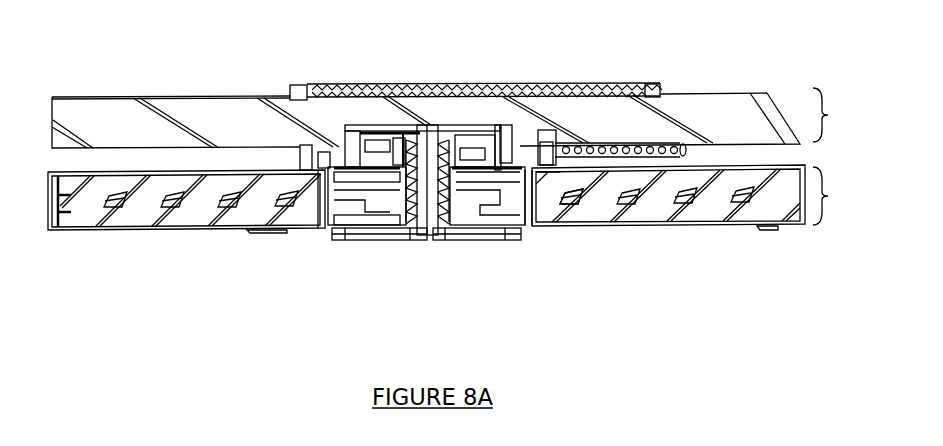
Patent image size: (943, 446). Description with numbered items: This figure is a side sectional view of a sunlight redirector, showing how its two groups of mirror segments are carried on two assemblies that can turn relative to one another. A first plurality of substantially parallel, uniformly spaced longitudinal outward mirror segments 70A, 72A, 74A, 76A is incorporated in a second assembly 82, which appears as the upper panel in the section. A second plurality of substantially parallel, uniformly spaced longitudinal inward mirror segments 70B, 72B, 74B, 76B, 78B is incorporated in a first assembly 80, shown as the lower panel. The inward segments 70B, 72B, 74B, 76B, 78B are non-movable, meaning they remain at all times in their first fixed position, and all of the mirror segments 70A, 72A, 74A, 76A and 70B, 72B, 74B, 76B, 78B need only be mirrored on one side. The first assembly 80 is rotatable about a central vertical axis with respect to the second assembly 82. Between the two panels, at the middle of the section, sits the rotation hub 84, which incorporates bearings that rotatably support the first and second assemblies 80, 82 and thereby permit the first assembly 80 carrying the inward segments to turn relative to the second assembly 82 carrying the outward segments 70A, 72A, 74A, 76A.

The outward mirror segment 70A is at (60, 127).
The outward mirror segment 72A is at (155, 110).
The outward mirror segment 74A is at (268, 102).
The outward mirror segment 76A is at (423, 110).
The inward mirror segment 70B is at (105, 200).
The inward mirror segment 72B is at (163, 200).
The inward mirror segment 74B is at (220, 200).
The inward mirror segment 76B is at (277, 200).
The inward mirror segment 78B is at (560, 197).
The first assembly 80 is at (815, 251).
The second assembly 82 is at (817, 76).
The rotation hub 84 is at (425, 270).